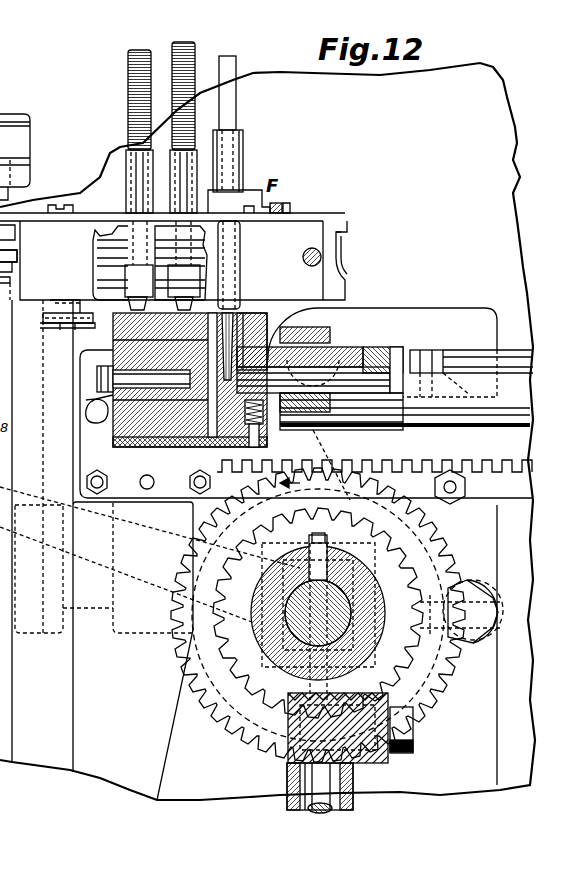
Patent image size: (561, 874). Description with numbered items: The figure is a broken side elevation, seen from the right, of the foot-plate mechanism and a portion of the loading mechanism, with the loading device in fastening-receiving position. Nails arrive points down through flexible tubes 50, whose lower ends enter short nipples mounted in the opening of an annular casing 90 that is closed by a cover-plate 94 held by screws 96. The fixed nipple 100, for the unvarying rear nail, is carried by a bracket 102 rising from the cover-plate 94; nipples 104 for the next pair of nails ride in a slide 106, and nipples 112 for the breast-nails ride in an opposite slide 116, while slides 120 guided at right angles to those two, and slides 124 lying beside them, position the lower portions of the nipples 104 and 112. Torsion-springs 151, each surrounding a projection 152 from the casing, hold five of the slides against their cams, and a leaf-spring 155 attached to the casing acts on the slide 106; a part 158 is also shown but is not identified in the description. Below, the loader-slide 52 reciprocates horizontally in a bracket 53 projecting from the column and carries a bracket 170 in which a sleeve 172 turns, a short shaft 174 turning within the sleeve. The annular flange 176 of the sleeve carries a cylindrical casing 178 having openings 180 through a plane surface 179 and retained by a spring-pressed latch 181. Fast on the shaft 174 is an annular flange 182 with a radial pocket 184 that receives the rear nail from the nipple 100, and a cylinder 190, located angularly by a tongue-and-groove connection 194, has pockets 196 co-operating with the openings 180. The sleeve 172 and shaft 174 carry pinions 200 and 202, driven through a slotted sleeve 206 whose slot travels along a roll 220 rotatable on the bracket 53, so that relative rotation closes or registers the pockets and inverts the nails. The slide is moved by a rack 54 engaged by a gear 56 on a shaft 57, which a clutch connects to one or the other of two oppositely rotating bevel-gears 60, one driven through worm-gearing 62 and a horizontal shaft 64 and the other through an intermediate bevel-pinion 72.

The flexible tubes 50 is at (229, 60).
The nipples 112 is at (128, 136).
The torsion-springs 151 is at (30, 183).
The slide 116 is at (98, 226).
The nipples 104 is at (198, 163).
The nipple 100 is at (245, 167).
The bracket 102 is at (286, 186).
The screws 96 is at (293, 205).
The cover-plate 94 is at (313, 212).
The annular casing 90 is at (347, 220).
The slide 106 is at (206, 240).
The pin 158 is at (321, 253).
The leaf-spring 155 is at (346, 262).
The slide 124 is at (127, 272).
The projection 152 is at (14, 272).
The slides 120 is at (214, 276).
The plane surface 179 is at (150, 312).
The openings 180 is at (226, 325).
The radial pocket 184 is at (244, 312).
The annular flange 176 is at (278, 308).
The annular flange 182 is at (300, 333).
The sleeve 172 is at (390, 358).
The short shaft 174 is at (398, 372).
The roll 220 is at (441, 357).
The bracket 53 is at (430, 308).
The slide 52 is at (510, 350).
The cylinder 190 is at (122, 431).
The cylindrical casing 178 is at (147, 447).
The pockets 196 is at (196, 440).
The tongue-and-groove connection 194 is at (164, 482).
The spring-pressed latch 181 is at (250, 442).
The pinion 200 is at (318, 432).
The pinion 202 is at (390, 424).
The sleeve 206 is at (510, 427).
The bracket 170 is at (301, 487).
The rack 54 is at (510, 645).
The bevel-gears 60 is at (280, 648).
The shaft 57 is at (262, 672).
The intermediate bevel-pinion 72 is at (280, 720).
The worm-gearing 62 is at (290, 720).
The gear 56 is at (450, 693).
The horizontal shaft 64 is at (414, 740).